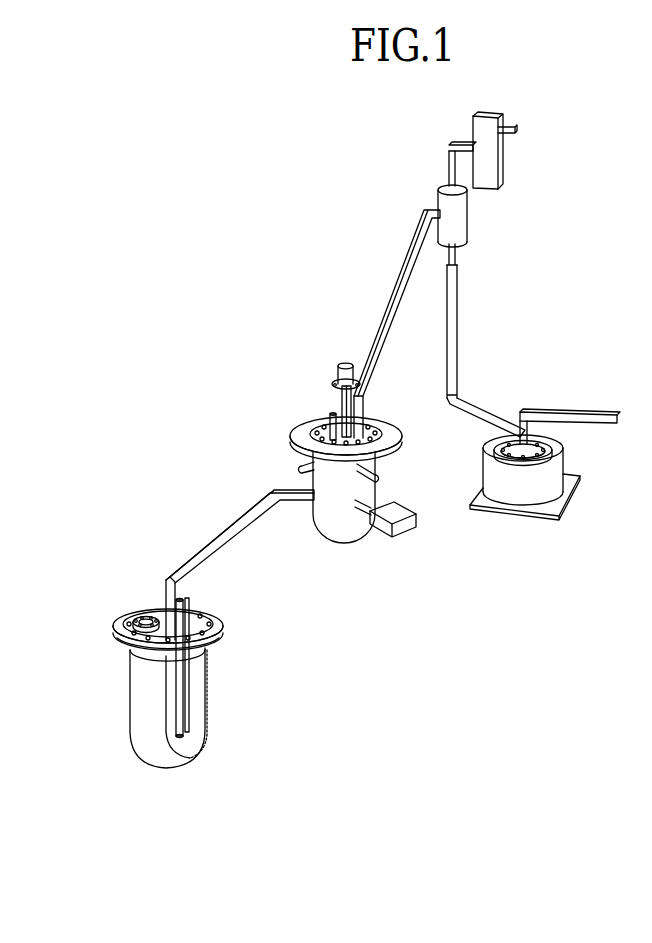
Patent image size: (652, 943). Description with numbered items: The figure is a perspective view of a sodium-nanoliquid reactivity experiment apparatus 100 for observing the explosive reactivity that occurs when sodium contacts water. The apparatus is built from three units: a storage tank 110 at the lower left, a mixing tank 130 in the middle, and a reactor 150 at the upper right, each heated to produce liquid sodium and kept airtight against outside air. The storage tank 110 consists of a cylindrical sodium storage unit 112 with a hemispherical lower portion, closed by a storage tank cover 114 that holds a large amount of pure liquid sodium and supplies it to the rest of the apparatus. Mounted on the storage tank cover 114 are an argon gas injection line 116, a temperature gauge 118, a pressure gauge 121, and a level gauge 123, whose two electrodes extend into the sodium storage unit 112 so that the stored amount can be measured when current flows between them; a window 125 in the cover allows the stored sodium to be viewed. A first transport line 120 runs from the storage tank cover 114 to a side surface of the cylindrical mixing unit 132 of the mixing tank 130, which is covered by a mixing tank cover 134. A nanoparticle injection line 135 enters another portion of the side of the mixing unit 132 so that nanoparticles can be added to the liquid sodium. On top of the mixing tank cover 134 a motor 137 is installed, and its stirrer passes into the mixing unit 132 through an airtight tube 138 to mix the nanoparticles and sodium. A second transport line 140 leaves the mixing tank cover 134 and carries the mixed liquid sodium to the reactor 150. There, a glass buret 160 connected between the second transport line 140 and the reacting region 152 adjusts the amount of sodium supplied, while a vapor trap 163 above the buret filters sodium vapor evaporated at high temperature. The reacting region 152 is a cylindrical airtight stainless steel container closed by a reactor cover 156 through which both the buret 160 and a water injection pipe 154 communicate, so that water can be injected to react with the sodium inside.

The sodium-nanoliquid reactivity experiment apparatus 100 is at (332, 172).
The storage tank 110 is at (103, 621).
The sodium storage unit 112 is at (138, 721).
The storage tank cover 114 is at (141, 650).
The argon gas injection line 116 is at (155, 620).
The temperature gauge 118 is at (217, 629).
The first transport line 120 is at (230, 530).
The pressure gauge 121 is at (182, 610).
The level gauge 123 is at (182, 599).
The window 125 is at (119, 639).
The mixing tank 130 is at (288, 428).
The mixing unit 132 is at (337, 522).
The mixing tank cover 134 is at (318, 437).
The nanoparticle injection line 135 is at (371, 521).
The motor 137 is at (339, 370).
The tube 138 is at (341, 400).
The second transport line 140 is at (410, 254).
The reactor 150 is at (512, 394).
The reacting region 152 is at (566, 452).
The water injection pipe 154 is at (584, 413).
The reactor cover 156 is at (530, 458).
The buret 160 is at (457, 293).
The vapor trap 163 is at (505, 170).